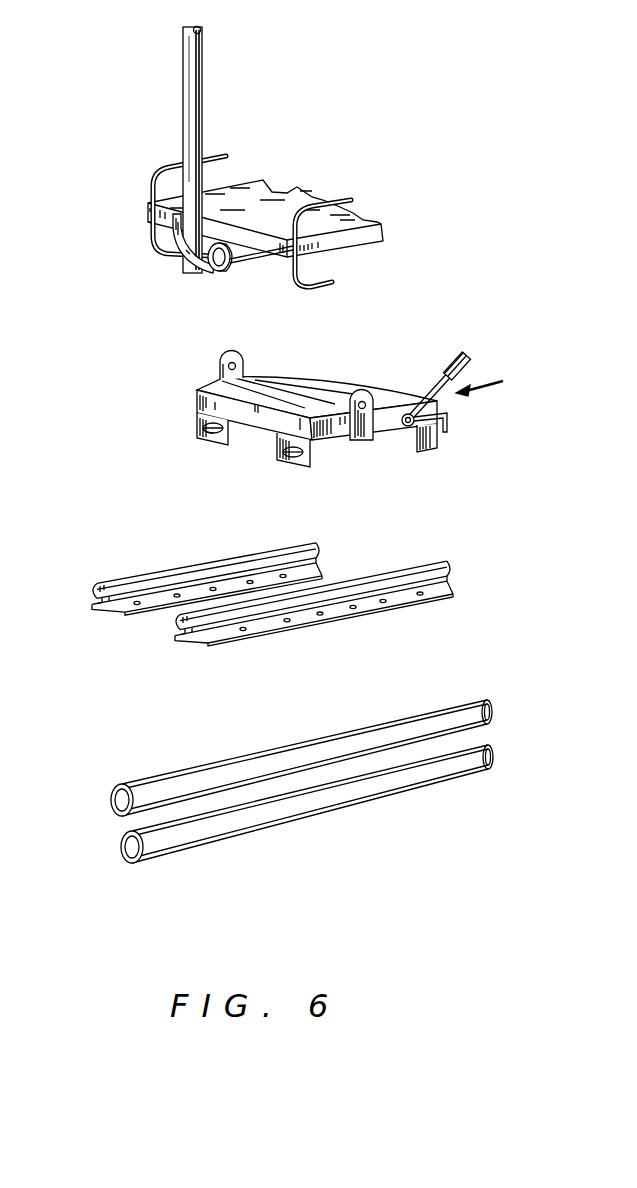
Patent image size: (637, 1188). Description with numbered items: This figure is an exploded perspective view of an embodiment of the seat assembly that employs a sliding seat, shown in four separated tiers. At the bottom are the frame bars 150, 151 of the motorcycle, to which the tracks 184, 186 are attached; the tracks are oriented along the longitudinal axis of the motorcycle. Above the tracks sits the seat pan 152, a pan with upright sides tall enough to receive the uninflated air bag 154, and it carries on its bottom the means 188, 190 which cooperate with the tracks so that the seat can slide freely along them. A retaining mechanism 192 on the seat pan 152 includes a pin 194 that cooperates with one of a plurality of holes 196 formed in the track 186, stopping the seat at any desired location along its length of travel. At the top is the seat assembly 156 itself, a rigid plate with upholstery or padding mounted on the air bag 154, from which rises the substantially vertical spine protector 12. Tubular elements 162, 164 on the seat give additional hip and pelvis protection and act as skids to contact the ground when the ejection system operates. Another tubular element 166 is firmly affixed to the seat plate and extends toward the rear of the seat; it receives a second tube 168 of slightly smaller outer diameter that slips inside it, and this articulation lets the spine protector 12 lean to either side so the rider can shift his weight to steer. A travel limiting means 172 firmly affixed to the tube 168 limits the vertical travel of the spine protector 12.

The spine protector 12 is at (203, 68).
The frame bar 150 is at (232, 833).
The frame bar 151 is at (143, 779).
The seat pan 152 is at (196, 407).
The air bag 154 is at (358, 390).
The seat assembly 156 is at (287, 190).
The tubular element 162 is at (178, 163).
The tubular element 164 is at (313, 270).
The mounting tube 166 is at (256, 266).
The tube 168 is at (214, 271).
The travel limiting means 172 is at (175, 243).
The track 184 is at (95, 603).
The track 186 is at (427, 562).
The track-cooperating means 188 is at (244, 445).
The track-cooperating means 190 is at (327, 467).
The retaining mechanism 192 is at (475, 389).
The pin 194 is at (448, 428).
The holes 196 is at (385, 600).